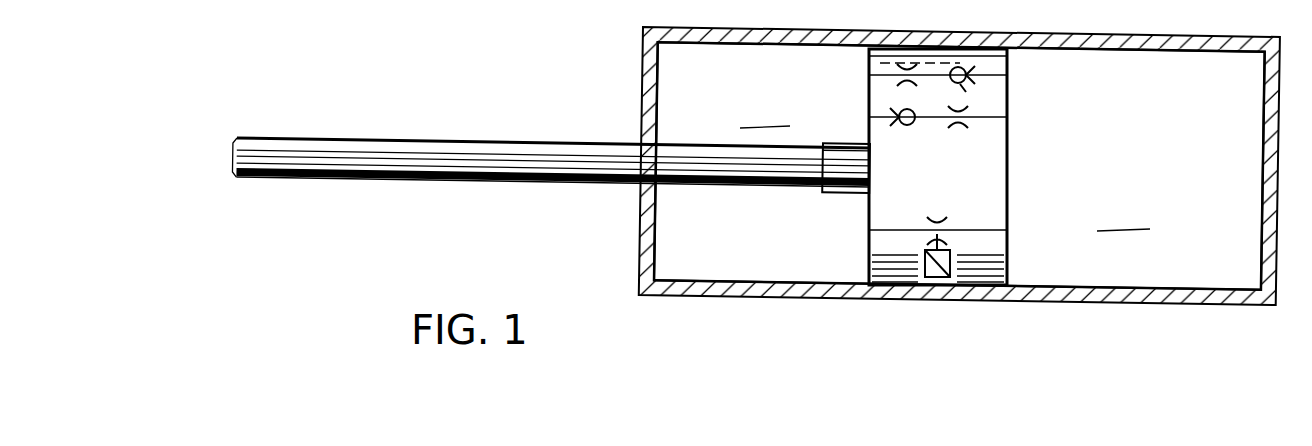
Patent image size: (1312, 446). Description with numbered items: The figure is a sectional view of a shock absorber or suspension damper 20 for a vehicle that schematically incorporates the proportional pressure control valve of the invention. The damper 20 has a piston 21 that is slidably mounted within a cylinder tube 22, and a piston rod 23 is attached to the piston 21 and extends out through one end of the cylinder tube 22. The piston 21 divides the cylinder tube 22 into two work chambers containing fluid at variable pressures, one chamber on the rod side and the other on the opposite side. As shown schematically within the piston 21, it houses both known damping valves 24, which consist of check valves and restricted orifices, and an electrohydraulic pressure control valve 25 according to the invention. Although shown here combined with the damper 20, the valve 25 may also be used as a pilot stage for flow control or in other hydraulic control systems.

The shock absorber 20 is at (626, 63).
The piston 21 is at (1008, 198).
The cylinder tube 22 is at (1167, 52).
The piston rod 23 is at (562, 181).
The damping valves 24 is at (936, 64).
The electrohydraulic pressure control valve 25 is at (905, 252).